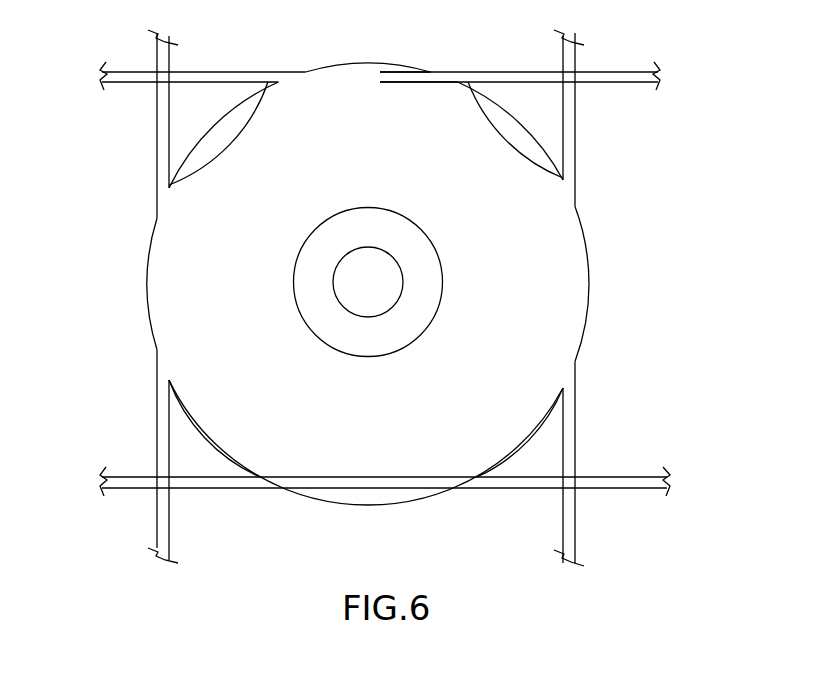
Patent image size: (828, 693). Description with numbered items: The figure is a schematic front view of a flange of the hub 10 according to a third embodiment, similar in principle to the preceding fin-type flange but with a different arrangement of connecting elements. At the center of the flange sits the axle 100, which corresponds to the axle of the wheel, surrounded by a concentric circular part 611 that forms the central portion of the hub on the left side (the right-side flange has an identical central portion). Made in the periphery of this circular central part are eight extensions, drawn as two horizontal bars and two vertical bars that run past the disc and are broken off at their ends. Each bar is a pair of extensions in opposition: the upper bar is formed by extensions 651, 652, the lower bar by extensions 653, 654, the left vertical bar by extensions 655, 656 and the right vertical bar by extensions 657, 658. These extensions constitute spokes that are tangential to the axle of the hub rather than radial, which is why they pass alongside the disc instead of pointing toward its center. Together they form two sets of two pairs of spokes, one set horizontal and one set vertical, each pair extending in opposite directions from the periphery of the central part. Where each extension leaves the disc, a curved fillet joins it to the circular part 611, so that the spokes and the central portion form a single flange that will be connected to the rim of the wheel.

The hub 10 is at (335, 243).
The axle 100 is at (353, 298).
The central portion of hub, left side 611 is at (343, 488).
The tangential extension 651 is at (122, 75).
The tangential extension 652 is at (613, 75).
The tangential extension 653 is at (133, 480).
The tangential extension 654 is at (613, 480).
The tangential extension 655 is at (160, 512).
The tangential extension 656 is at (160, 117).
The tangential extension 657 is at (568, 522).
The tangential extension 658 is at (568, 132).